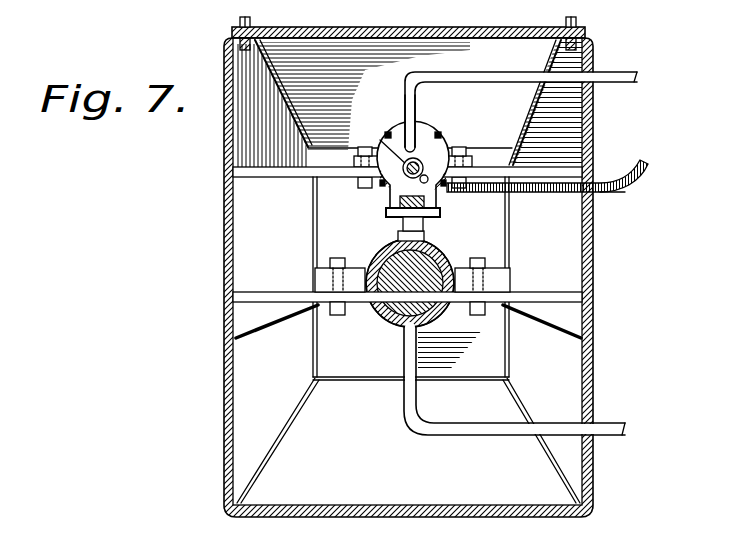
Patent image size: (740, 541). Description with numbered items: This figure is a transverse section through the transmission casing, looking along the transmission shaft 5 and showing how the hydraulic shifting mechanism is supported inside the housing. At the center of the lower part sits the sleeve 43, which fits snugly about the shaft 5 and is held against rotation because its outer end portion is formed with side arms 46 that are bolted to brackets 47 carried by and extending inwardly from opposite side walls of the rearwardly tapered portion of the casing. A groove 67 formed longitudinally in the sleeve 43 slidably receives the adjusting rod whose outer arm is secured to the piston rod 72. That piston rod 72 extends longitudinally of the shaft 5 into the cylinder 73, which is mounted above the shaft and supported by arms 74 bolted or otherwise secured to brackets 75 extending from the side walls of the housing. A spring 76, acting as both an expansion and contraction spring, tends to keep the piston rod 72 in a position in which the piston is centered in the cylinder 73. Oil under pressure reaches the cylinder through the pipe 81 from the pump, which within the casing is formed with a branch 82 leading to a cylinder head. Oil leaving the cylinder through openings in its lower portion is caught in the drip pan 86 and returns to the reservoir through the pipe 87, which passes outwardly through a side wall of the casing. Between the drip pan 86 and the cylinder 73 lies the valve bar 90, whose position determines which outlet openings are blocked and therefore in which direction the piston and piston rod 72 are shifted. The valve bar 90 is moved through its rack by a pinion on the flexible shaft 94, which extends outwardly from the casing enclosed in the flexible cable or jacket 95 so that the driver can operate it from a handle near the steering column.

The transmission shaft 5 is at (446, 29).
The sleeve 43 is at (383, 323).
The side arms 46 is at (314, 273).
The brackets 47 is at (289, 322).
The groove 67 is at (396, 243).
The piston rod 72 is at (421, 161).
The cylinder 73 is at (400, 121).
The arms 74 is at (346, 156).
The brackets 75 is at (543, 167).
The spring 76 is at (378, 142).
The pipe 81 is at (479, 72).
The branch 82 is at (418, 104).
The drip pan 86 is at (387, 214).
The pipe 87 is at (424, 233).
The valve bar 90 is at (399, 203).
The flexible shaft 94 is at (643, 157).
The flexible cable or jacket 95 is at (630, 193).